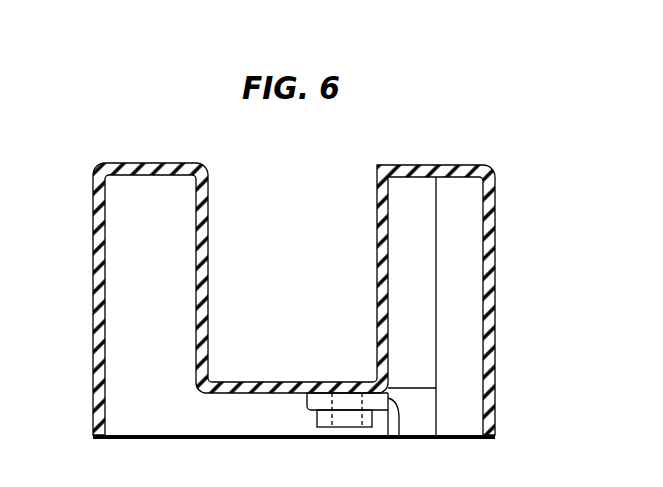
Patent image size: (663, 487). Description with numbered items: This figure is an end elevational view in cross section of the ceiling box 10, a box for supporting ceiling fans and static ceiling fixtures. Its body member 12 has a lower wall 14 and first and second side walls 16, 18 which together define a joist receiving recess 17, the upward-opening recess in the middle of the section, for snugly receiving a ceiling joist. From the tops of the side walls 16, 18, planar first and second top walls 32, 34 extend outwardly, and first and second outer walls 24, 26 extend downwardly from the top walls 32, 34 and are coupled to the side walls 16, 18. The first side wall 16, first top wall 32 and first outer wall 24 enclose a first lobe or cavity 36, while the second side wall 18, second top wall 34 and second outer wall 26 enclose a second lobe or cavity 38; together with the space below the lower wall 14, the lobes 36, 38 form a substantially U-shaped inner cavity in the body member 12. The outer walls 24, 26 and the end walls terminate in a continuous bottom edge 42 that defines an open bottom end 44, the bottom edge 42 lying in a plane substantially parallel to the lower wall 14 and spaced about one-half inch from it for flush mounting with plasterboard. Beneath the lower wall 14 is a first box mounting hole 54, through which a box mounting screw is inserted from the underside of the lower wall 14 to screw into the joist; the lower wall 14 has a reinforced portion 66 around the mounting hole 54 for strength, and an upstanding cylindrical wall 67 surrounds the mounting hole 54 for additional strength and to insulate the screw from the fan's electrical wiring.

The ceiling box 10 is at (293, 287).
The body member 12 is at (467, 278).
The lower wall 14 is at (289, 379).
The first side wall 16 is at (373, 236).
The joist receiving recess 17 is at (290, 259).
The second side wall 18 is at (214, 234).
The first outer wall 24 is at (497, 283).
The second outer wall 26 is at (93, 283).
The first top wall 32 is at (128, 163).
The second top wall 34 is at (450, 164).
The first lobe or cavity 36 is at (119, 277).
The second lobe or cavity 38 is at (468, 248).
The bottom edge 42 is at (463, 442).
The open bottom end 44 is at (191, 442).
The first box mounting hole 54 is at (352, 428).
The reinforced portion 66 is at (398, 439).
The upstanding cylindrical wall 67 is at (311, 412).